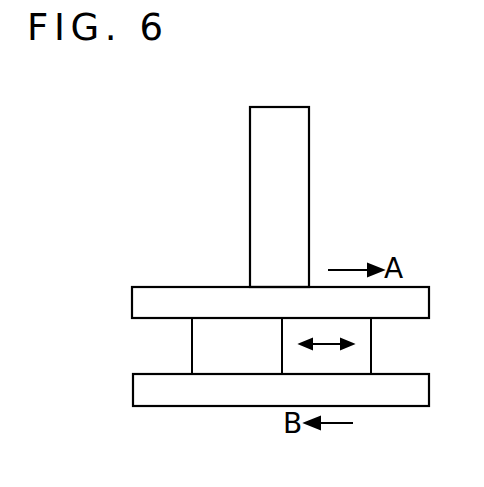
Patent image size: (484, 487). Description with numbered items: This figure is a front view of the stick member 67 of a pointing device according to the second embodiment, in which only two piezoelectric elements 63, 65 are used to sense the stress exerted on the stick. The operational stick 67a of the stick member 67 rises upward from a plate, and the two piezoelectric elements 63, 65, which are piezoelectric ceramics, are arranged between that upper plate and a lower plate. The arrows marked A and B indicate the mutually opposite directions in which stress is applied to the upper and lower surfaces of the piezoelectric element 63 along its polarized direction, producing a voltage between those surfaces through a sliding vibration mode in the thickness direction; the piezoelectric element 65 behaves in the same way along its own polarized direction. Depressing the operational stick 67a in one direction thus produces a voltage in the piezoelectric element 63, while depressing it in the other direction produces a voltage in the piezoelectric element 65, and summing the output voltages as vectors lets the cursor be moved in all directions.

The piezoelectric element 63 is at (353, 363).
The piezoelectric element 65 is at (243, 352).
The stick member 67 is at (233, 258).
The operational stick 67a is at (303, 213).